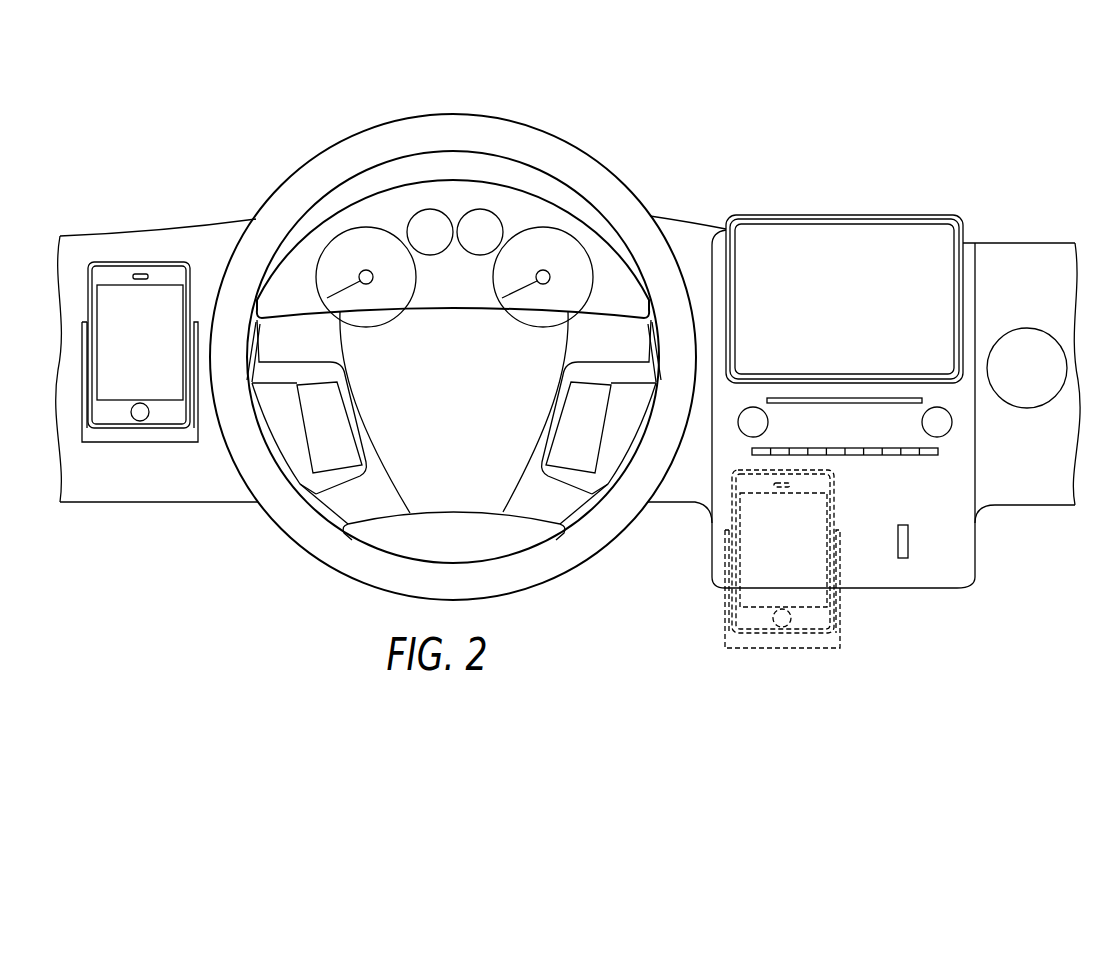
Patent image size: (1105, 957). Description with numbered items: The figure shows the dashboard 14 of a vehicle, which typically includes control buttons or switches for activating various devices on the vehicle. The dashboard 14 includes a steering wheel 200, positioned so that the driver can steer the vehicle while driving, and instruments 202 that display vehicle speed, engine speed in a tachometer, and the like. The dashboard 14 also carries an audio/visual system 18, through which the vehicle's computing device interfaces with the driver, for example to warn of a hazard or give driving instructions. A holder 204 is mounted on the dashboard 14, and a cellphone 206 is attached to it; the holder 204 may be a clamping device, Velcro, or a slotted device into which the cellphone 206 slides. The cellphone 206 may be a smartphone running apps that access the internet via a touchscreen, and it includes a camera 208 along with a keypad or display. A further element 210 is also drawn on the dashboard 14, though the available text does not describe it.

The dashboard 14 is at (670, 158).
The audio/visual system 18 is at (848, 201).
The steering wheel 200 is at (465, 114).
The instruments 202 is at (430, 180).
The holder 204 is at (118, 440).
The cellphone 206 is at (140, 262).
The camera 208 is at (140, 421).
The port 210 is at (903, 560).